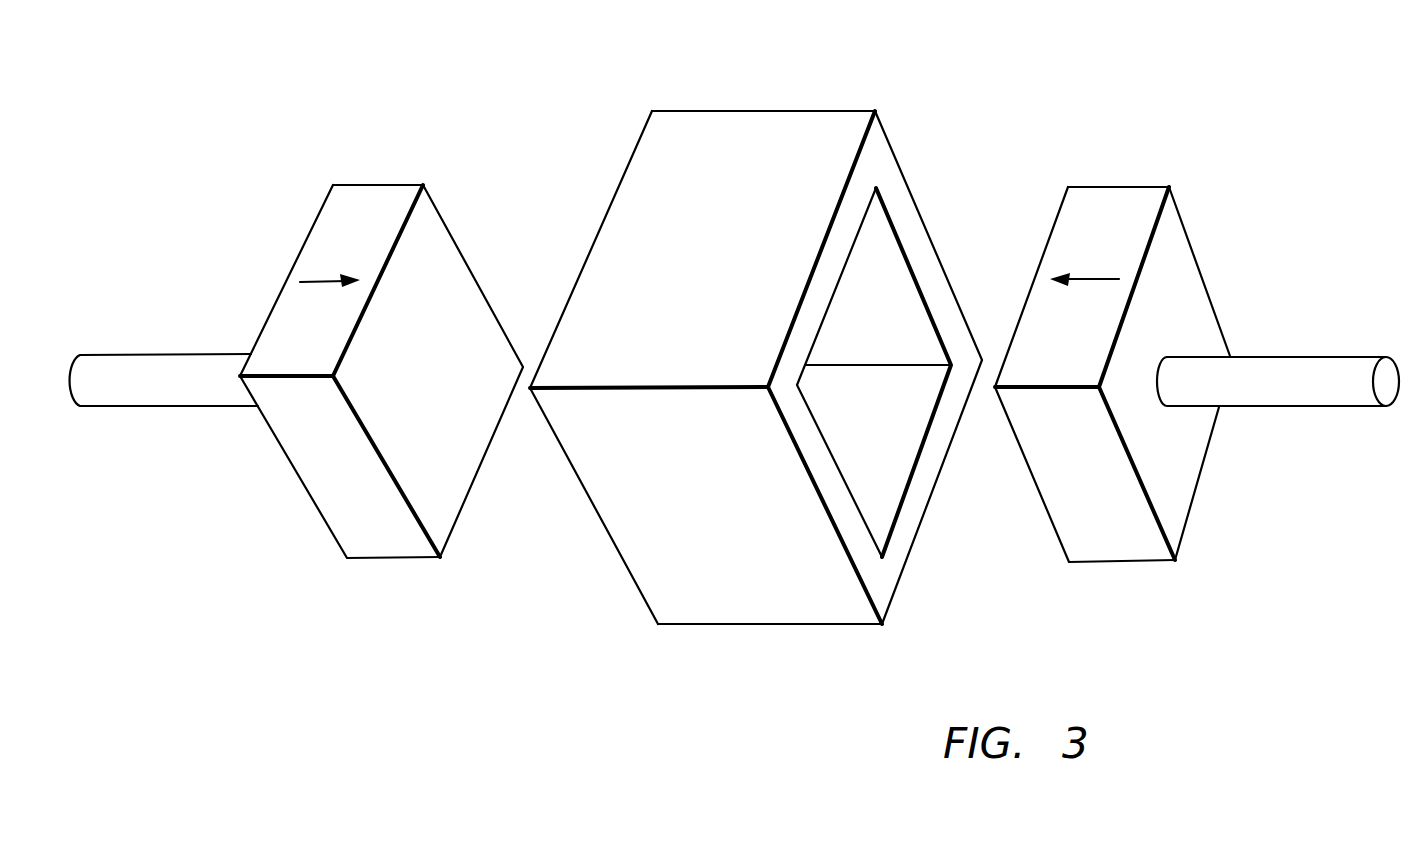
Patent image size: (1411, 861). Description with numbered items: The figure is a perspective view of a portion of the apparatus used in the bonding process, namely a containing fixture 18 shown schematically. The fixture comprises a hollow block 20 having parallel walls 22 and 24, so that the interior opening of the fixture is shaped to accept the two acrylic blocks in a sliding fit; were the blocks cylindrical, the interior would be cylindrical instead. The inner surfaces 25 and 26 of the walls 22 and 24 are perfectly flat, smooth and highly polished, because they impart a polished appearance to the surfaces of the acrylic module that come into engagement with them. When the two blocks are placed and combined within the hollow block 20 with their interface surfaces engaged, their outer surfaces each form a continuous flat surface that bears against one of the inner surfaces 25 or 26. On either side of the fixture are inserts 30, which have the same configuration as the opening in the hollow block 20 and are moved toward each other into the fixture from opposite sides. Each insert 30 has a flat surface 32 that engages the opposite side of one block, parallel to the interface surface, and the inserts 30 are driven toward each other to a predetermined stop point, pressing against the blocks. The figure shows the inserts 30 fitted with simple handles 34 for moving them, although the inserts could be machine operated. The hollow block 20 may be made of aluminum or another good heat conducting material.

The containing fixture 18 is at (616, 676).
The hollow block 20 is at (791, 92).
The wall 22 is at (928, 262).
The wall 24 is at (813, 295).
The inner surface 25 is at (886, 335).
The inner surface 26 is at (889, 443).
The insert 30 is at (433, 167).
The flat surface 32 is at (452, 385).
The handle 34 is at (147, 362).